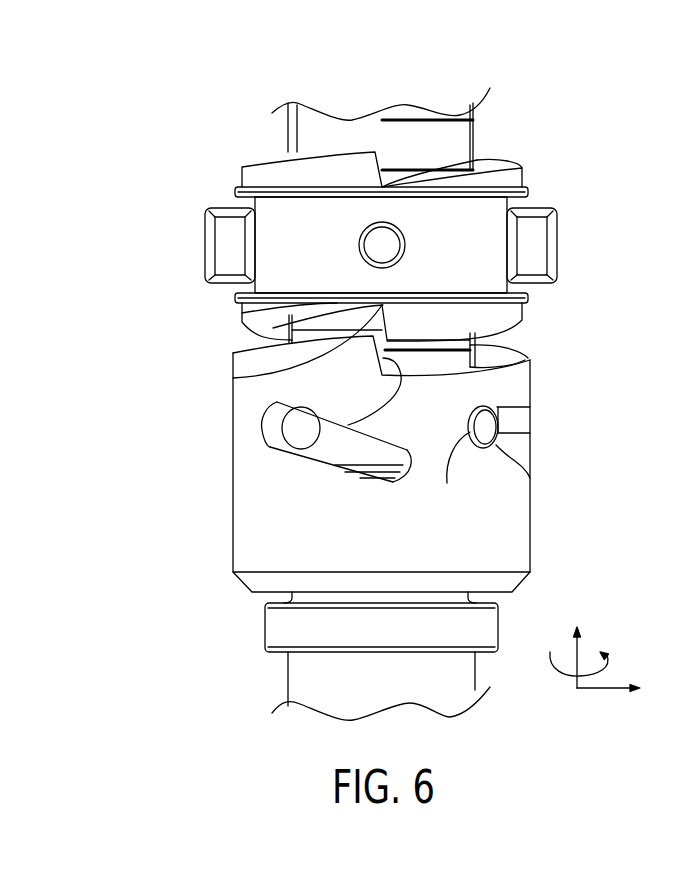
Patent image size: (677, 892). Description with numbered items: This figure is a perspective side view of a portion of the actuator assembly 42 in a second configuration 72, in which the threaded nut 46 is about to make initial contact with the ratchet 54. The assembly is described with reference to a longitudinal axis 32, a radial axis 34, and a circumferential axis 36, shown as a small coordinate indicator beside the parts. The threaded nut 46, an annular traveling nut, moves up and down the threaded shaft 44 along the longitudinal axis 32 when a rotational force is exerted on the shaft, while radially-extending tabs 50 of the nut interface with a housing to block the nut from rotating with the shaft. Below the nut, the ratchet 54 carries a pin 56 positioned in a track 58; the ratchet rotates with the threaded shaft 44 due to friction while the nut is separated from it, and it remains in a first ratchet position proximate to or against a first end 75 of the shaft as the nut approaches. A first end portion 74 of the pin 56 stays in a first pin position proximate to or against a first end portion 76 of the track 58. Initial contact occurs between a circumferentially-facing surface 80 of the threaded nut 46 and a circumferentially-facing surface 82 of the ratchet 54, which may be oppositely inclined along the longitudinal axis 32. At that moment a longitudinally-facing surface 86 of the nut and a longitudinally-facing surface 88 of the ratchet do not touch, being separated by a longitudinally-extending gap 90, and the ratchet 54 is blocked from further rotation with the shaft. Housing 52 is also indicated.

The longitudinal axis 32 is at (578, 653).
The radial axis 34 is at (602, 690).
The circumferential axis 36 is at (557, 677).
The actuator assembly 42 is at (540, 82).
The threaded shaft 44 is at (457, 137).
The threaded nut 46 is at (490, 220).
The radially-extending tabs 50 is at (537, 235).
The housing 52 is at (545, 537).
The ratchet 54 is at (518, 495).
The pin 56 is at (487, 428).
The track 58 is at (520, 445).
The second configuration 72 is at (568, 115).
The first end portion of the pin 74 is at (485, 417).
The first end of the threaded shaft 75 is at (306, 600).
The first end portion of the track 76 is at (446, 503).
The circumferentially-facing surface of the threaded nut 80 is at (233, 378).
The circumferentially-facing surface of the ratchet 82 is at (348, 425).
The longitudinally-facing surface of the threaded nut 86 is at (422, 308).
The longitudinally-facing surface of the ratchet 88 is at (505, 352).
The longitudinally-extending gap 90 is at (422, 378).